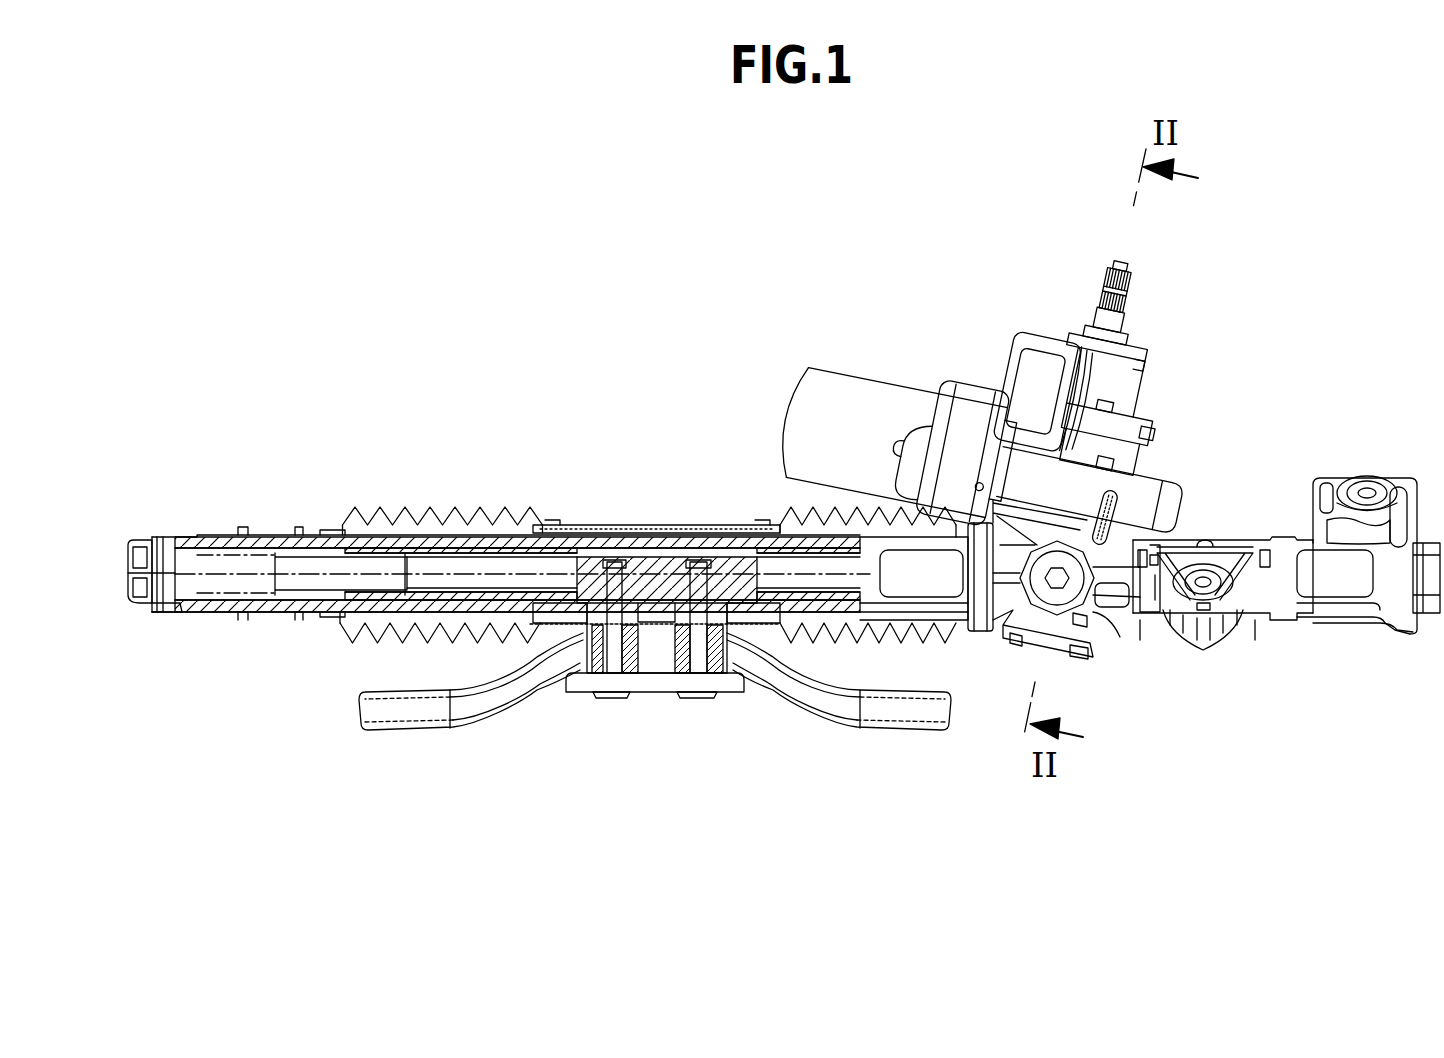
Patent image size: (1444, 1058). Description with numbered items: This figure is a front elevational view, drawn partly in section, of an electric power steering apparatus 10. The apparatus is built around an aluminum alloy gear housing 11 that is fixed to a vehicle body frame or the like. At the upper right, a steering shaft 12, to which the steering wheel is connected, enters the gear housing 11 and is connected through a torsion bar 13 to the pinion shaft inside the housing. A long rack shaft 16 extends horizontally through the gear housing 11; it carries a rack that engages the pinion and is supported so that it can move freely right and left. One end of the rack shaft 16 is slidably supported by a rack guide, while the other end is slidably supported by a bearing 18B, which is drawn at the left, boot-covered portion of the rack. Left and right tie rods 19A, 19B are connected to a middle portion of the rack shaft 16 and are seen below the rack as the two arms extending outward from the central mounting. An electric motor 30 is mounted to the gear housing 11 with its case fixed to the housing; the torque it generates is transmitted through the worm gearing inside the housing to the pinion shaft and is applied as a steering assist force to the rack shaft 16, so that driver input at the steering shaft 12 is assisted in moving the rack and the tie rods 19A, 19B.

The electric power steering apparatus 10 is at (594, 373).
The gear housing 11 is at (1125, 387).
The steering shaft 12 is at (1115, 328).
The torsion bar 13 is at (1118, 268).
The rack shaft 16 is at (738, 568).
The bearing 18B is at (447, 592).
The left tie rod 19A is at (420, 718).
The right tie rod 19B is at (912, 718).
The electric motor 30 is at (865, 402).